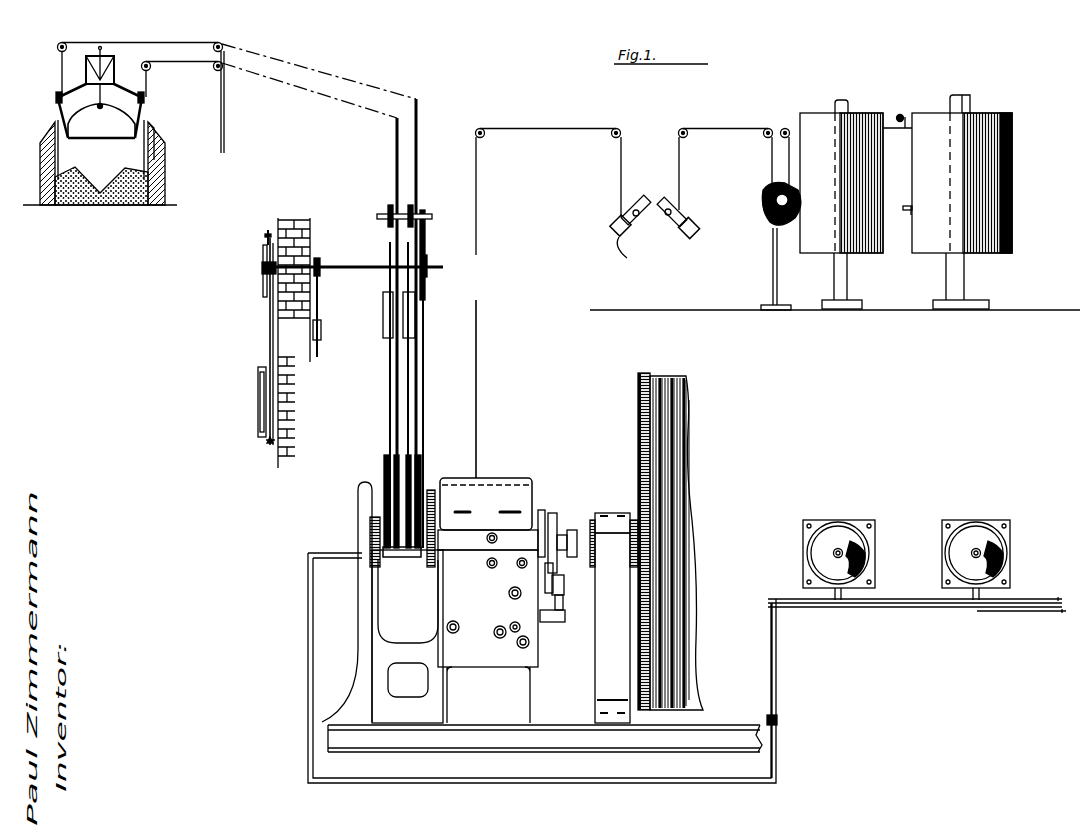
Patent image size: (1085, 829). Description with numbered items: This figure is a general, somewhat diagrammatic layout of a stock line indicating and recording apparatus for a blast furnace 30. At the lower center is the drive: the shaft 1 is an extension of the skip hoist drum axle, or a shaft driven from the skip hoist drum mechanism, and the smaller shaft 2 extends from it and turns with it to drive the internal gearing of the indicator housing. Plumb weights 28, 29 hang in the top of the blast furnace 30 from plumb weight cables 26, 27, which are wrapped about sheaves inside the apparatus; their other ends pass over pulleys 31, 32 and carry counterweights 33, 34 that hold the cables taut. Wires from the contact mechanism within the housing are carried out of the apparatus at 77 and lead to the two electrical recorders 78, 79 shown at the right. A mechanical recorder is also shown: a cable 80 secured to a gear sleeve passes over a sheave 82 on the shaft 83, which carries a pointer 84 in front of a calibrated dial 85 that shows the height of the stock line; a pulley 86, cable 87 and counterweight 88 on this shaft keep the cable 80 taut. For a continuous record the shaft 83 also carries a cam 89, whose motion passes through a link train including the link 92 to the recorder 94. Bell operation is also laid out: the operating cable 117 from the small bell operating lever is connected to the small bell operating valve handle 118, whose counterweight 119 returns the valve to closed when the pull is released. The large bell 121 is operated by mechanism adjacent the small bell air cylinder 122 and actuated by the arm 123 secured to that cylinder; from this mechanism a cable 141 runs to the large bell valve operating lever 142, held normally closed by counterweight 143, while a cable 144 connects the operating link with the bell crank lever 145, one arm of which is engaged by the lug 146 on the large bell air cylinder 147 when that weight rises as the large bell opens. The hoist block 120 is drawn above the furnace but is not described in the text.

The shaft 1 is at (587, 520).
The smaller shaft 2 is at (570, 537).
The plumb weight cable 26 is at (418, 396).
The plumb weight cable 27 is at (398, 391).
The plumb weight 28 is at (57, 158).
The plumb weight 29 is at (152, 130).
The blast furnace 30 is at (165, 165).
The pulley 31 is at (415, 210).
The pulley 32 is at (388, 208).
The counterweight 33 is at (415, 323).
The counterweight 34 is at (383, 325).
The wires 77 is at (308, 672).
The recorder 78 is at (978, 524).
The recorder 79 is at (851, 524).
The cable 80 is at (426, 364).
The sheave 82 is at (428, 262).
The shaft 83 is at (357, 263).
The pointer 84 is at (264, 252).
The dial 85 is at (268, 236).
The pulley 86 is at (318, 258).
The cable 87 is at (321, 304).
The counterweight 88 is at (321, 340).
The cam 89 is at (266, 279).
The link 92 is at (268, 340).
The recorder 94 is at (258, 400).
The operating cable 117 is at (480, 413).
The small bell operating valve handle 118 is at (642, 198).
The counterweight 119 is at (626, 256).
The hoist block 120 is at (86, 58).
The large bell 121 is at (103, 135).
The small bell air cylinder 122 is at (818, 242).
The arm 123 is at (795, 203).
The cable 141 is at (680, 163).
The large bell valve operating lever 142 is at (680, 212).
The counterweight 143 is at (690, 238).
The cable 144 is at (800, 128).
The bell crank lever 145 is at (906, 113).
The lug 146 is at (907, 215).
The large bell air cylinder 147 is at (992, 223).